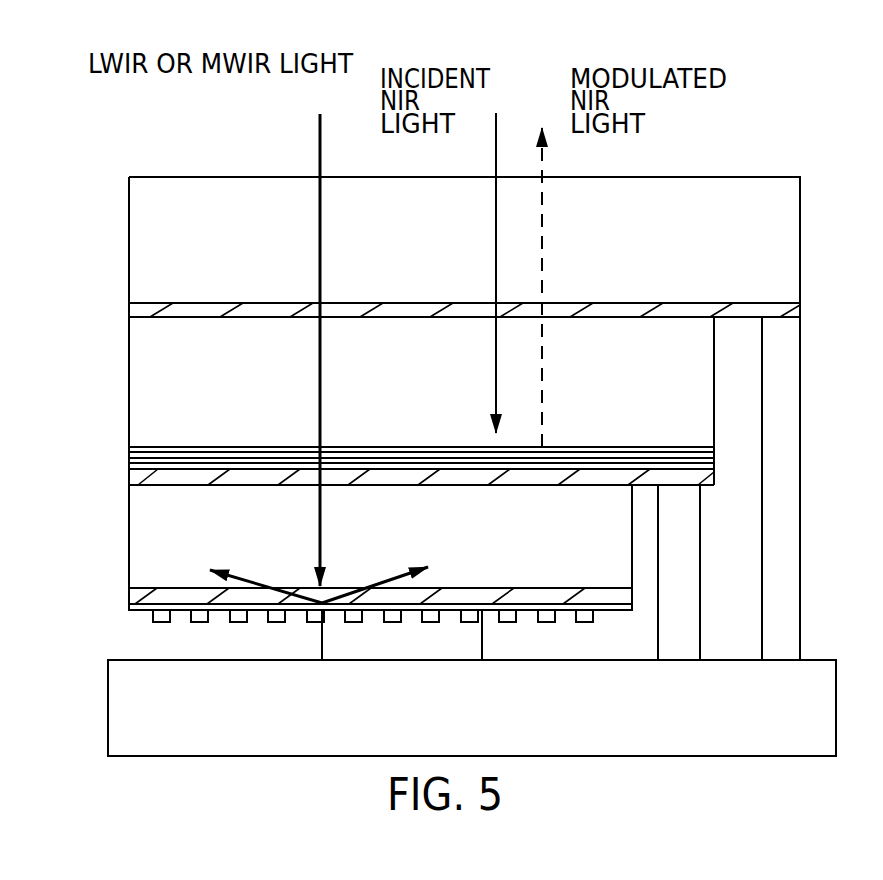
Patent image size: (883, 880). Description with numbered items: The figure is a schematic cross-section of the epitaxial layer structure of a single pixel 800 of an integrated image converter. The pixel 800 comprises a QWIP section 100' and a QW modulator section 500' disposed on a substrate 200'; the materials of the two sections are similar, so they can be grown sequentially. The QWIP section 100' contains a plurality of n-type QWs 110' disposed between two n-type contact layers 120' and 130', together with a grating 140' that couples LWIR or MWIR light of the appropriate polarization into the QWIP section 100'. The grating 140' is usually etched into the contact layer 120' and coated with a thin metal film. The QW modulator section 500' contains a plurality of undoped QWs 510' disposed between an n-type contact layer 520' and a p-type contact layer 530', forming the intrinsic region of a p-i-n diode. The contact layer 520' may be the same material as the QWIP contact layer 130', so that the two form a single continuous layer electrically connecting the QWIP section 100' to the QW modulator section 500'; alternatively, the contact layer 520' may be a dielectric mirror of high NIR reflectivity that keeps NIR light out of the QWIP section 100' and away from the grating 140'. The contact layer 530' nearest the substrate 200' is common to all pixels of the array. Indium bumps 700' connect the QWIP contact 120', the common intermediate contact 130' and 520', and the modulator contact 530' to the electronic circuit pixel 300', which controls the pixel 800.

The pixel 800 is at (105, 212).
The substrate 200' is at (494, 268).
The QW modulator section 500' is at (384, 401).
The undoped QWs 510' is at (421, 395).
The n-type contact layer 520' is at (421, 432).
The p-type contact layer 530' is at (464, 338).
The QWIP section 100' is at (349, 547).
The n-type QWs 110' is at (215, 525).
The n-type contact layer 120' is at (380, 571).
The n-type contact layer 130' is at (421, 498).
The grating 140' is at (380, 634).
The electronic circuit pixel 300' is at (441, 692).
The indium bumps 700' is at (531, 488).